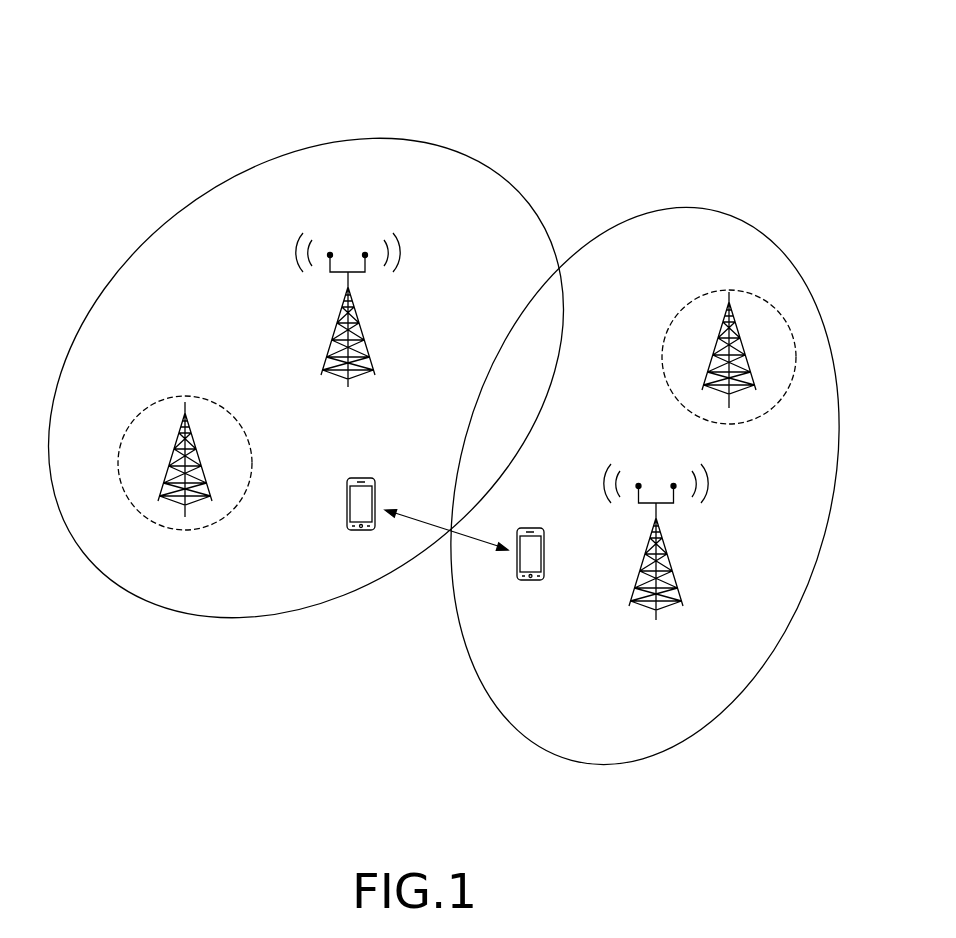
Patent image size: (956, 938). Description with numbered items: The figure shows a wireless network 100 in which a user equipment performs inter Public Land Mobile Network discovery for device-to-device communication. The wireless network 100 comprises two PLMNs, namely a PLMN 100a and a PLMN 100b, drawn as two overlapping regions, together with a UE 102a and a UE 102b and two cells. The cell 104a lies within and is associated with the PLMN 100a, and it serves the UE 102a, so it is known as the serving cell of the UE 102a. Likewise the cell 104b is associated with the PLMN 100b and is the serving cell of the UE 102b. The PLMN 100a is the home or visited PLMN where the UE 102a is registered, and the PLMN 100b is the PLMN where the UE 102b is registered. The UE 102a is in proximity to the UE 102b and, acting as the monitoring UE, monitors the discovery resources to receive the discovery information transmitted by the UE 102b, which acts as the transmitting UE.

The wireless network 100 is at (496, 138).
The PLMN 100a is at (355, 310).
The PLMN 100b is at (664, 545).
The UE 102a is at (359, 476).
The UE 102b is at (530, 526).
The cell 104a is at (185, 393).
The cell 104b is at (728, 288).